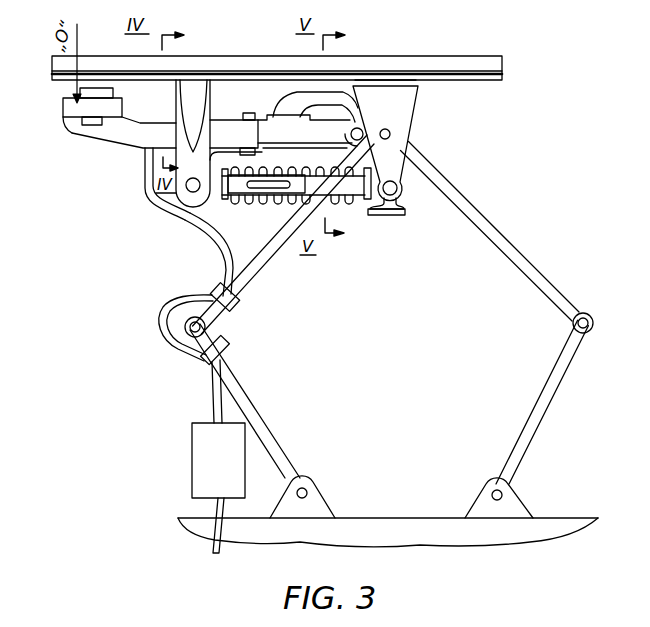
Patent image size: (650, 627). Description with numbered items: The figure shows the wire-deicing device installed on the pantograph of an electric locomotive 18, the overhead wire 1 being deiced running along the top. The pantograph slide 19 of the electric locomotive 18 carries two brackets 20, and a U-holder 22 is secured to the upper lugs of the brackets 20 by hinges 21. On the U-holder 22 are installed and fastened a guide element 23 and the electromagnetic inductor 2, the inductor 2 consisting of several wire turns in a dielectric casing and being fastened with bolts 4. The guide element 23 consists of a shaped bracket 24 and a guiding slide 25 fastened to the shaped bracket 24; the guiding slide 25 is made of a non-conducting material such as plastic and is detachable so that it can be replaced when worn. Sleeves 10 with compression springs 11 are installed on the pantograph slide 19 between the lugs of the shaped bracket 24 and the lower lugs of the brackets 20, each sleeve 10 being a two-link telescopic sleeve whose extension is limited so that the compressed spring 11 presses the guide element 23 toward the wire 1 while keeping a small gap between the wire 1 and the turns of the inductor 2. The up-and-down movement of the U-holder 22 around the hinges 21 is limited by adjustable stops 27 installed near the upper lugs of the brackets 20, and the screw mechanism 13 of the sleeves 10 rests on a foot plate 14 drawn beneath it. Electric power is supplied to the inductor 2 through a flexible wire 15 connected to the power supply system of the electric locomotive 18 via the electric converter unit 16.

The wire 1 is at (453, 62).
The electromagnetic inductor 2 is at (80, 103).
The bolts 4 is at (88, 140).
The sleeve 10 is at (362, 203).
The compression spring 11 is at (276, 203).
The screw mechanism 13 is at (364, 206).
The base plate 14 is at (402, 213).
The flexible wire 15 is at (198, 232).
The electric converter unit 16 is at (193, 451).
The electric locomotive 18 is at (548, 519).
The pantograph slide 19 is at (410, 107).
The brackets 20 is at (356, 106).
The hinges 21 is at (364, 137).
The U-holder 22 is at (143, 140).
The guide element 23 is at (173, 203).
The shaped bracket 24 is at (178, 130).
The guiding slide 25 is at (206, 102).
The adjustable stops 27 is at (290, 107).